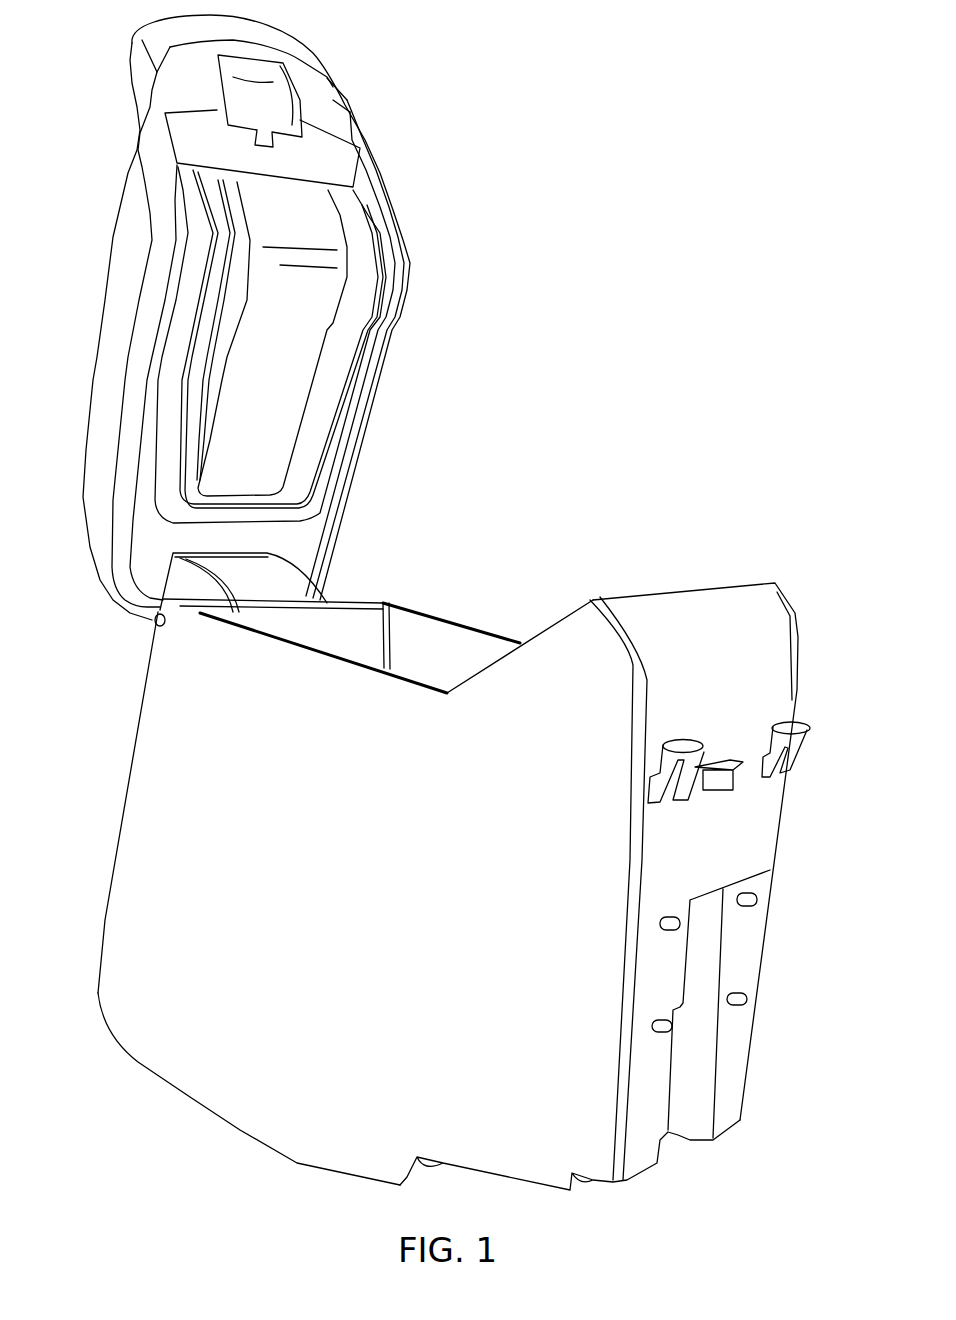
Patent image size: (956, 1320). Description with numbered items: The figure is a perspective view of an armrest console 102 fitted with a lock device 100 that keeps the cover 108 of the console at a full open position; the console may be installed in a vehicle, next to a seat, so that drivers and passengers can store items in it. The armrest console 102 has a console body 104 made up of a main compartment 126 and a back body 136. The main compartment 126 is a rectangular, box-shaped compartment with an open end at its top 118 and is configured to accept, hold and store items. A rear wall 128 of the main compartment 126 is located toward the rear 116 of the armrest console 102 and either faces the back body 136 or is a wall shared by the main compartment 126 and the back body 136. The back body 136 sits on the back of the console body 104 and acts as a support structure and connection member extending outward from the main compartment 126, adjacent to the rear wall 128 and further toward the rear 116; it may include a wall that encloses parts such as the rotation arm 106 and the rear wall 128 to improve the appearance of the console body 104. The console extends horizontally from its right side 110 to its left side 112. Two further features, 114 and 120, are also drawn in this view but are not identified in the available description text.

The lock device 100 is at (130, 675).
The armrest console 102 is at (428, 36).
The console body 104 is at (514, 625).
The rotation arm 106 is at (327, 290).
The cover 108 is at (400, 358).
The right side 110 is at (228, 1040).
The left side 112 is at (480, 632).
The mounting hooks 114 is at (757, 813).
The rear 116 is at (126, 803).
The top 118 is at (583, 600).
The bottom edge 120 is at (537, 1185).
The main compartment 126 is at (437, 632).
The rear wall 128 is at (353, 618).
The back body 136 is at (333, 600).